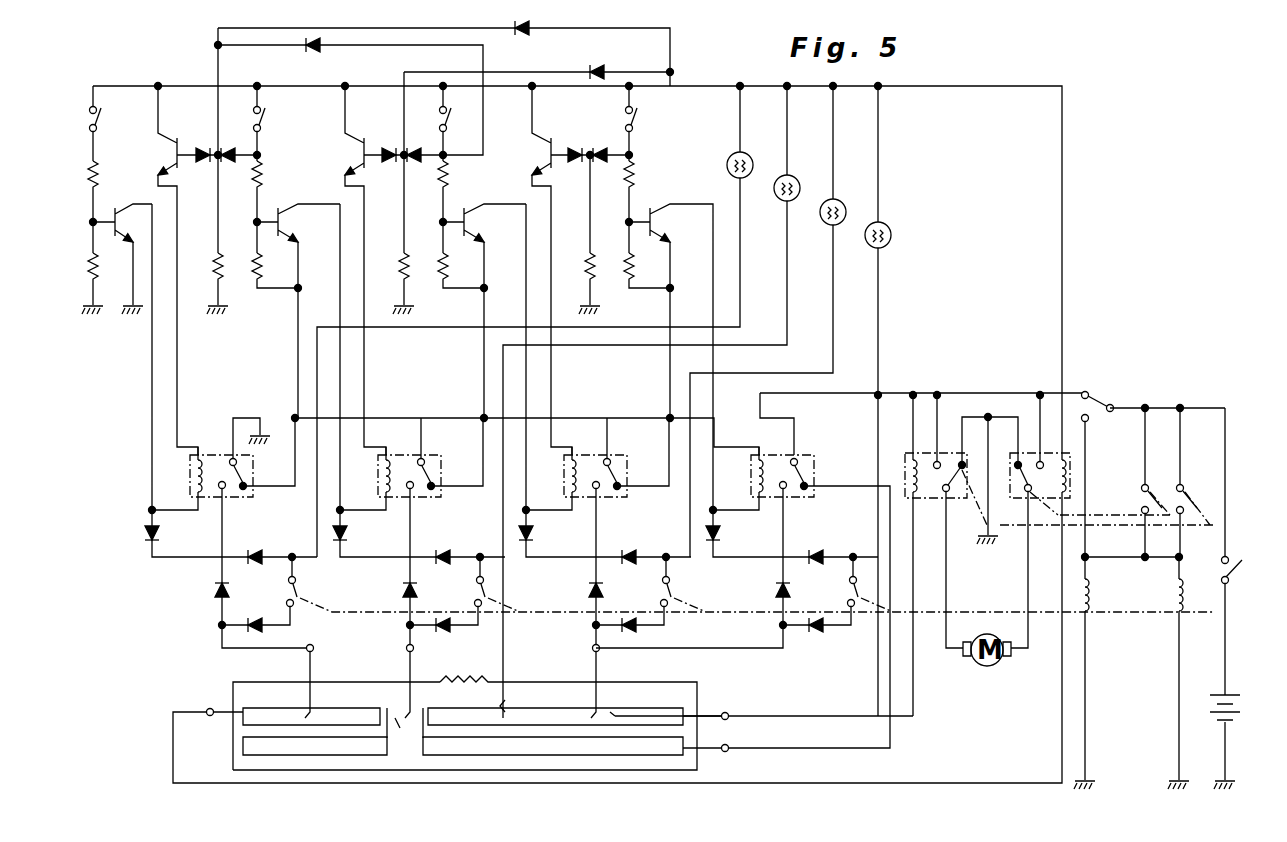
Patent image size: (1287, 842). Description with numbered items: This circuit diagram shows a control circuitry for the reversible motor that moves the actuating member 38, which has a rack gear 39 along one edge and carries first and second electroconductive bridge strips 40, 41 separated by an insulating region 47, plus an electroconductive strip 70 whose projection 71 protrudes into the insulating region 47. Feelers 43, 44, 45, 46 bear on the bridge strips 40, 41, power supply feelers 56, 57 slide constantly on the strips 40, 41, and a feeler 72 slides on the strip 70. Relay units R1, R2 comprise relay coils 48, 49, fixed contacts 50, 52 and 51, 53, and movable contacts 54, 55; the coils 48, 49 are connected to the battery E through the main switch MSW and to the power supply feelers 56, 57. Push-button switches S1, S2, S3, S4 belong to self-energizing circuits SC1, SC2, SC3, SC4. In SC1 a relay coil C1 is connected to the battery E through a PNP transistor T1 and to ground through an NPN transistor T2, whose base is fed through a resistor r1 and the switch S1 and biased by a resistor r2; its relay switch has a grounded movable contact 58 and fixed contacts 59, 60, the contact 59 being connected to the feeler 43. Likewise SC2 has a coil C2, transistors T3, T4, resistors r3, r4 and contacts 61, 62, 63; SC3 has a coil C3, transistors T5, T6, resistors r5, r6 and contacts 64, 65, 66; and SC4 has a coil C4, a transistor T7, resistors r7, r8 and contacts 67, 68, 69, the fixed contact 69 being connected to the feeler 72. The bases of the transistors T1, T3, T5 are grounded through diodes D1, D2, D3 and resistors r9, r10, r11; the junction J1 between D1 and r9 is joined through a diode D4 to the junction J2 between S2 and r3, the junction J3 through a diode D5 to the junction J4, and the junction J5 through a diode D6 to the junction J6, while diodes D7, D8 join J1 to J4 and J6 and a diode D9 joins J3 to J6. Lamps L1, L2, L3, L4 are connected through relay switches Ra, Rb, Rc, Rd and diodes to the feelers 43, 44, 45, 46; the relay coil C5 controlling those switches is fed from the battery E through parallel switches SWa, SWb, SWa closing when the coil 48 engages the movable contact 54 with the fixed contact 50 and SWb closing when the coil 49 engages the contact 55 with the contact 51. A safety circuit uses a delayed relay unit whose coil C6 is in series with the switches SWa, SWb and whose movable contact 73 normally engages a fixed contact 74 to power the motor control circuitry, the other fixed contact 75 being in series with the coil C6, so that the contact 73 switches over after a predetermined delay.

The push-button switch S1 is at (90, 114).
The push-button switch S2 is at (262, 122).
The push-button switch S3 is at (452, 122).
The push-button switch S4 is at (638, 122).
The PNP-type switching transistor T1 is at (172, 148).
The NPN-type switching transistor T2 is at (112, 212).
The PNP-type switching transistor T3 is at (360, 148).
The NPN-type switching transistor T4 is at (288, 210).
The PNP-type switching transistor T5 is at (546, 145).
The NPN-type switching transistor T6 is at (480, 226).
The NPN-type switching transistor T7 is at (666, 226).
The diode D1 is at (200, 148).
The diode D2 is at (386, 148).
The diode D3 is at (578, 148).
The diode D4 is at (230, 148).
The diode D5 is at (416, 148).
The diode D6 is at (602, 162).
The diode D7 is at (318, 52).
The diode D8 is at (519, 35).
The diode D9 is at (603, 64).
The junction J1 is at (218, 160).
The junction J2 is at (259, 157).
The junction J3 is at (404, 160).
The junction J4 is at (446, 160).
The junction J5 is at (589, 160).
The junction J6 is at (634, 159).
The resistor r1 is at (88, 185).
The resistor r2 is at (88, 278).
The resistor r3 is at (253, 185).
The resistor r4 is at (253, 278).
The resistor r5 is at (439, 185).
The resistor r6 is at (439, 278).
The resistor r7 is at (635, 180).
The resistor r8 is at (626, 278).
The resistor r9 is at (214, 280).
The resistor r10 is at (400, 278).
The resistor r11 is at (586, 278).
The lamp L1 is at (753, 155).
The lamp L2 is at (800, 178).
The lamp L3 is at (846, 201).
The lamp L4 is at (891, 225).
The self-energizing circuit SC1 is at (218, 450).
The self-energizing circuit SC2 is at (406, 450).
The self-energizing circuit SC3 is at (592, 450).
The self-energizing circuit SC4 is at (790, 452).
The relay coil C1 is at (194, 472).
The relay coil C2 is at (382, 472).
The relay coil C3 is at (568, 472).
The relay coil C4 is at (755, 472).
The relay coil C5 is at (1175, 600).
The relay coil C6 is at (1090, 600).
The movable contact 58 is at (240, 468).
The fixed contact 59 is at (220, 490).
The fixed contact 60 is at (248, 490).
The movable contact 61 is at (426, 458).
The fixed contact 62 is at (408, 490).
The fixed contact 63 is at (436, 490).
The movable contact 64 is at (612, 458).
The fixed contact 65 is at (594, 490).
The fixed contact 66 is at (622, 490).
The movable contact 67 is at (800, 468).
The fixed contact 68 is at (781, 490).
The fixed contact 69 is at (810, 490).
The relay switch Ra is at (300, 590).
The relay switch Rb is at (488, 592).
The relay switch Rc is at (674, 592).
The relay switch Rd is at (850, 592).
The relay unit R1 is at (1050, 445).
The relay unit R2 is at (925, 445).
The relay coil 48 is at (1066, 480).
The relay coil 49 is at (905, 475).
The fixed contact 50 is at (1045, 462).
The fixed contact 51 is at (940, 460).
The fixed contact 52 is at (1040, 440).
The fixed contact 53 is at (965, 462).
The movable contact 54 is at (1003, 530).
The movable contact 55 is at (925, 560).
The power supply feeler 56 is at (245, 718).
The power supply feeler 57 is at (722, 710).
The electroconductive strip 70 is at (683, 760).
The projection 71 is at (463, 740).
The feeler 72 is at (725, 745).
The movable contact 73 is at (1115, 410).
The fixed contact 74 is at (1097, 402).
The fixed contact 75 is at (1110, 404).
The first switch SWa is at (1150, 485).
The second switch SWb is at (1185, 485).
The main switch MSW is at (1232, 580).
The battery E is at (1238, 710).
The actuating member 38 is at (275, 682).
The rack gear 39 is at (465, 681).
The first electroconductive bridge strip 40 is at (260, 710).
The second electroconductive bridge strip 41 is at (655, 708).
The electroconductive feeler 43 is at (312, 700).
The electroconductive feeler 44 is at (412, 700).
The electroconductive feeler 45 is at (508, 700).
The electroconductive feeler 46 is at (598, 700).
The insulating region 47 is at (397, 720).